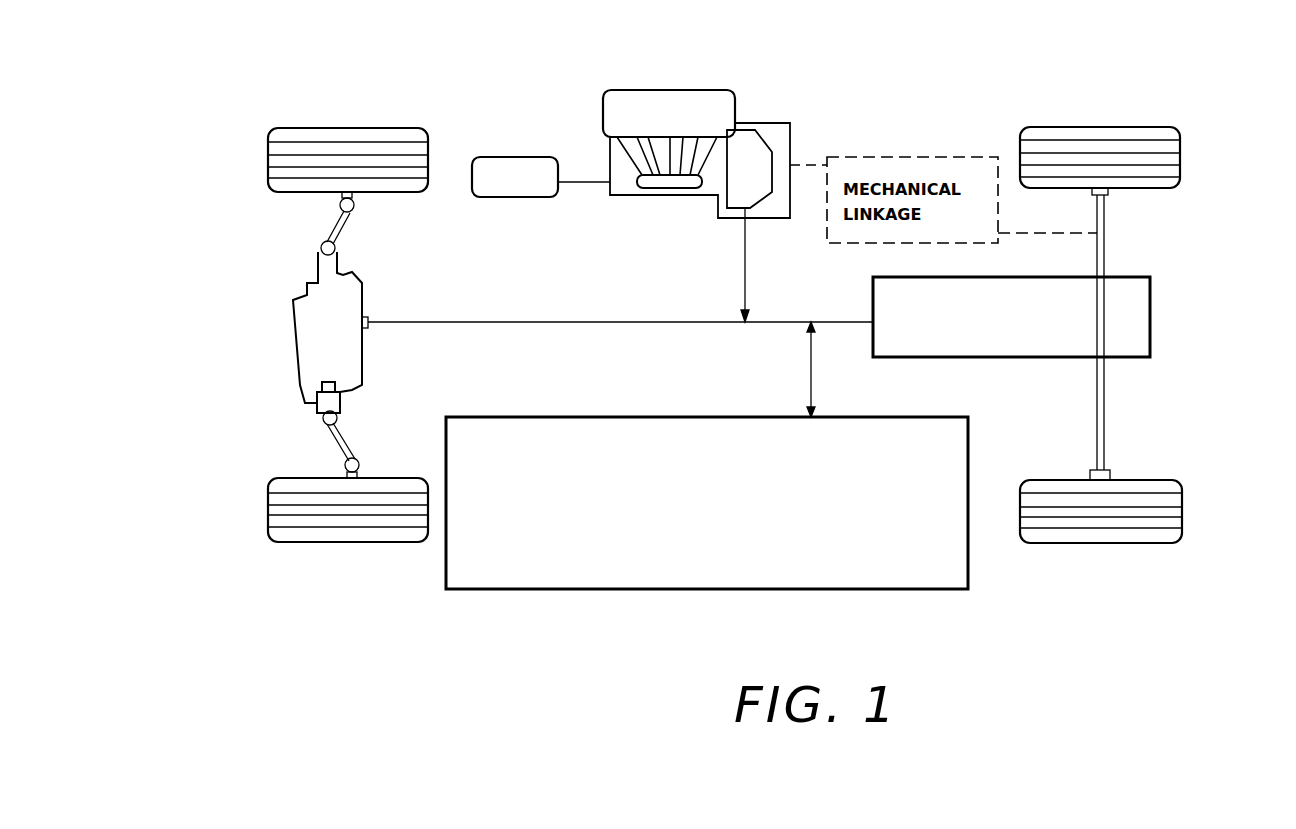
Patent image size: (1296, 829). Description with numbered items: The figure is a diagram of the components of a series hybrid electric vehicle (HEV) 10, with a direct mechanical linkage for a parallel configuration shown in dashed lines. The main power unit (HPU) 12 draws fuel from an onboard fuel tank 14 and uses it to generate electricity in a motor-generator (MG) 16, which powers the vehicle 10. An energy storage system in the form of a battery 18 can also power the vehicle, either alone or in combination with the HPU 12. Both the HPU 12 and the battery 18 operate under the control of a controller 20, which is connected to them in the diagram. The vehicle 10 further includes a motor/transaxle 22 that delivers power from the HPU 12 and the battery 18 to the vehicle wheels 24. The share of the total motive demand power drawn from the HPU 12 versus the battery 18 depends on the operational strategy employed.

The series hybrid electric vehicle 10 is at (1007, 47).
The main power unit 12 is at (680, 90).
The onboard fuel tank 14 is at (515, 157).
The motor-generator 16 is at (773, 123).
The battery 18 is at (518, 589).
The controller 20 is at (1150, 328).
The motor/transaxle 22 is at (297, 342).
The vehicle wheels 24 is at (268, 162).